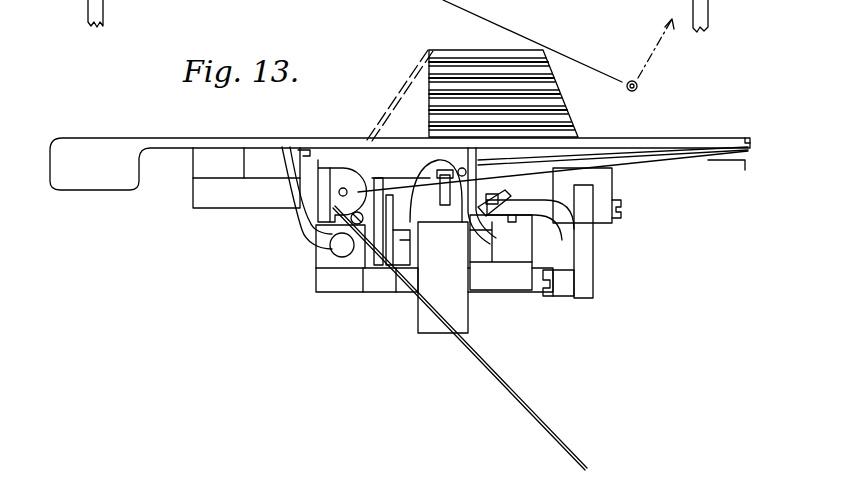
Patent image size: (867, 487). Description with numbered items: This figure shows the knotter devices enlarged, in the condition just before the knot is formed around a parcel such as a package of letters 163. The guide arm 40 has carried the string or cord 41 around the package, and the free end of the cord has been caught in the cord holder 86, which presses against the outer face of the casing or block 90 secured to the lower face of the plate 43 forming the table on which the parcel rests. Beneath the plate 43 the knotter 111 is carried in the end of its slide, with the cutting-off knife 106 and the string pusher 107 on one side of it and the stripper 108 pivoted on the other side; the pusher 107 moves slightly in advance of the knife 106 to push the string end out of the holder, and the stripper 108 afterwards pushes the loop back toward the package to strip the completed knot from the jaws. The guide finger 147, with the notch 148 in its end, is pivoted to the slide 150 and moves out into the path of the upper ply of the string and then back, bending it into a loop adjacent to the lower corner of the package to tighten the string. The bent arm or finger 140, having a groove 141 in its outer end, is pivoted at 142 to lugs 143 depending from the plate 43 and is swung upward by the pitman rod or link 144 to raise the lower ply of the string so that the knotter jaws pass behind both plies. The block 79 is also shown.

The guide arm 40 is at (642, 85).
The string or cord 41 is at (430, 88).
The plate 43 is at (153, 142).
The block 79 is at (298, 190).
The cord holder 86 is at (317, 210).
The casing or block 90 is at (323, 262).
The cutting-off knife 106 is at (378, 186).
The string pusher 107 is at (393, 207).
The stripper 108 is at (425, 148).
The knotter 111 is at (434, 210).
The bent arm or finger 140 is at (587, 247).
The groove 141 is at (503, 197).
The pivot 142 is at (612, 220).
The lugs or projections 143 is at (613, 182).
The pitman rod or link 144 is at (565, 292).
The finger or lever 147 is at (560, 148).
The notch 148 is at (523, 163).
The slide 150 is at (706, 164).
The package of letters 163 is at (553, 92).